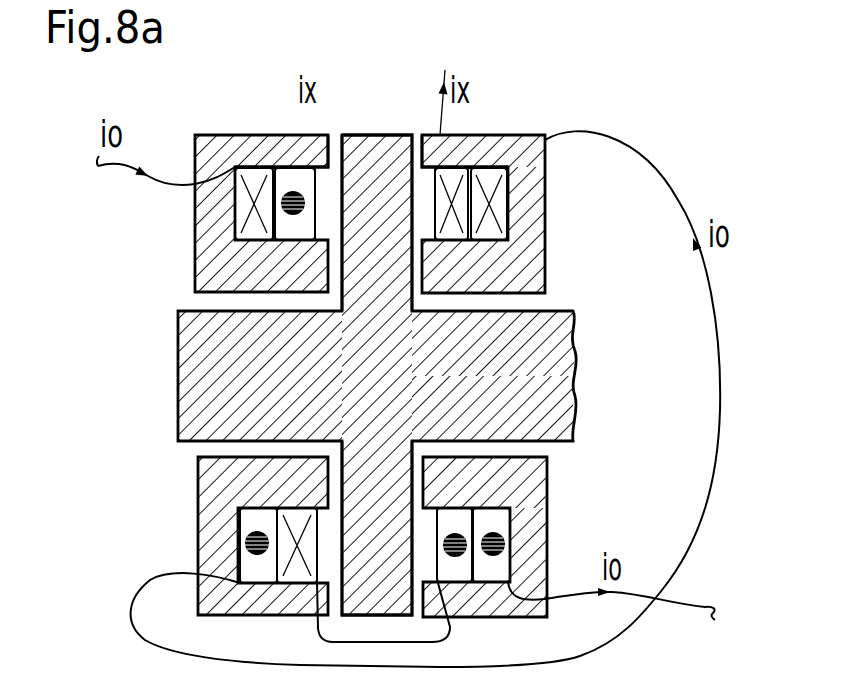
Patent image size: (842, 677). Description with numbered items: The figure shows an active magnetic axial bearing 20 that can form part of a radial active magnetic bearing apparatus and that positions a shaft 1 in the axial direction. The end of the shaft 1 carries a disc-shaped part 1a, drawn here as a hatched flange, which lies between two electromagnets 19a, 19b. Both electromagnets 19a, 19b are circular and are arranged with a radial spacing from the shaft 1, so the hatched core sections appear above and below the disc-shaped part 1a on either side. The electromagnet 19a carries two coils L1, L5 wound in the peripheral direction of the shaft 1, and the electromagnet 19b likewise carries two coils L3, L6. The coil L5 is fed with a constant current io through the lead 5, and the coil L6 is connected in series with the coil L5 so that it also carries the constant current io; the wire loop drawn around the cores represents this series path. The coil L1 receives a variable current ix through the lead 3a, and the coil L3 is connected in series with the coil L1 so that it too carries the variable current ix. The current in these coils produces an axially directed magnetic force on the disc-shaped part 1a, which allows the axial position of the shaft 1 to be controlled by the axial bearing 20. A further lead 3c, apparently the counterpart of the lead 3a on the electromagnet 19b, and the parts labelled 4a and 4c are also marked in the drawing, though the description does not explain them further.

The shaft 1 is at (532, 323).
The disc-shaped part 1a is at (375, 150).
The lead 3a is at (308, 137).
The pole arm 3c is at (438, 58).
The coil assembly 4a is at (243, 231).
The coil assembly 4c is at (508, 212).
The lead 5 is at (145, 168).
The electromagnet 19a is at (217, 147).
The electromagnet 19b is at (520, 155).
The coil L1 is at (292, 177).
The coil L3 is at (452, 175).
The coil L5 is at (247, 200).
The coil L6 is at (500, 195).
The axial bearing 20 is at (593, 75).